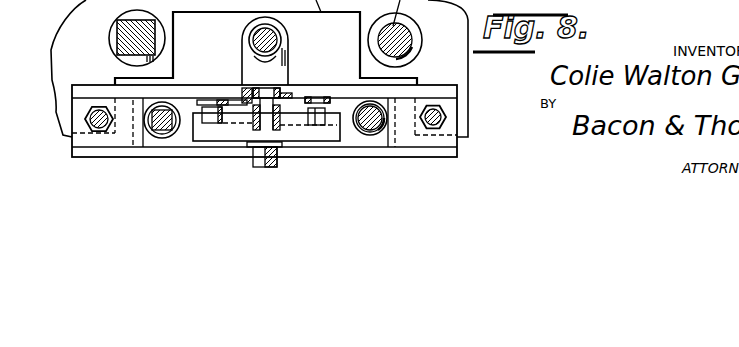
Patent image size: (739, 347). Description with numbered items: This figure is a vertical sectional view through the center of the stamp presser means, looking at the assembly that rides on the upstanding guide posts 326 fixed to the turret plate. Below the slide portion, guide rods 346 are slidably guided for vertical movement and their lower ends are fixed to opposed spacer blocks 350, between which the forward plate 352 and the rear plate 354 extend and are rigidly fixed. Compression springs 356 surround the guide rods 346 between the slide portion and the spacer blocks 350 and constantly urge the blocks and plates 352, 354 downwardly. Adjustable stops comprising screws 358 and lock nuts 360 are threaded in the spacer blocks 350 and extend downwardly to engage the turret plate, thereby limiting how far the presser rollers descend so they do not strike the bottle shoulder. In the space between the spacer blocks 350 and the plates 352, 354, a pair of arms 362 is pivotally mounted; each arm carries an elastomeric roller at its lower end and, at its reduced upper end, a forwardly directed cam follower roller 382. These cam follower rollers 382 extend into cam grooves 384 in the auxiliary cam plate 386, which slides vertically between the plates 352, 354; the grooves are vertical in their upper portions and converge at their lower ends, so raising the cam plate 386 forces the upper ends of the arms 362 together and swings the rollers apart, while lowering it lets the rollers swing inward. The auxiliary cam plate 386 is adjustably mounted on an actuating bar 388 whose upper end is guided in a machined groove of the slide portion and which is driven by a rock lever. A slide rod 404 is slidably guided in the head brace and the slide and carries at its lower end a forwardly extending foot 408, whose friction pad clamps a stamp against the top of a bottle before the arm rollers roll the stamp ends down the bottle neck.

The guide posts 326 is at (130, 32).
The guide rods 346 is at (157, 133).
The spacer blocks 350 is at (80, 132).
The forward plate 352 is at (82, 152).
The rear plate 354 is at (92, 90).
The compression springs 356 is at (161, 138).
The screws 358 is at (88, 114).
The lock nuts 360 is at (88, 123).
The arms 362 is at (219, 99).
The cam follower rollers 382 is at (214, 99).
The cam grooves 384 is at (213, 123).
The auxiliary cam plate 386 is at (299, 137).
The actuating bar 388 is at (282, 84).
The slide rod 404 is at (267, 28).
The foot 408 is at (246, 62).